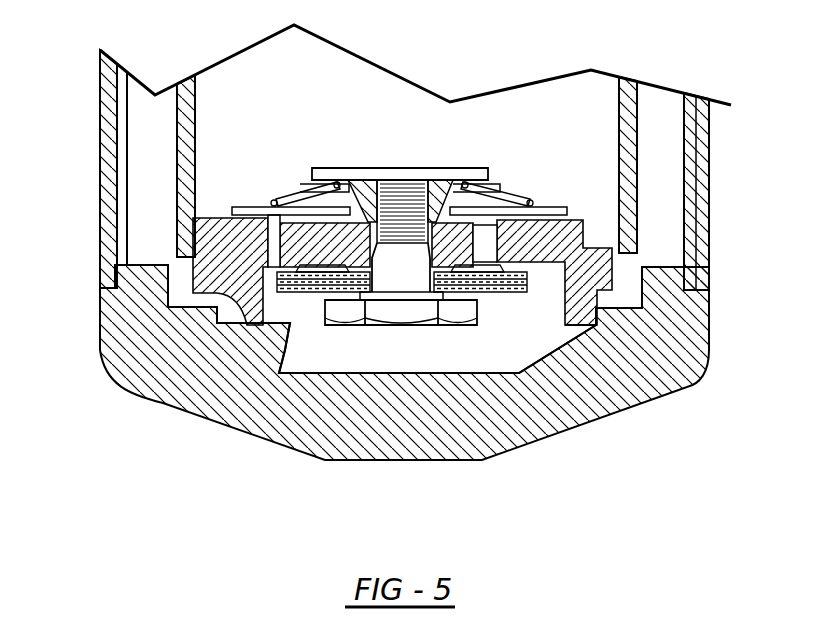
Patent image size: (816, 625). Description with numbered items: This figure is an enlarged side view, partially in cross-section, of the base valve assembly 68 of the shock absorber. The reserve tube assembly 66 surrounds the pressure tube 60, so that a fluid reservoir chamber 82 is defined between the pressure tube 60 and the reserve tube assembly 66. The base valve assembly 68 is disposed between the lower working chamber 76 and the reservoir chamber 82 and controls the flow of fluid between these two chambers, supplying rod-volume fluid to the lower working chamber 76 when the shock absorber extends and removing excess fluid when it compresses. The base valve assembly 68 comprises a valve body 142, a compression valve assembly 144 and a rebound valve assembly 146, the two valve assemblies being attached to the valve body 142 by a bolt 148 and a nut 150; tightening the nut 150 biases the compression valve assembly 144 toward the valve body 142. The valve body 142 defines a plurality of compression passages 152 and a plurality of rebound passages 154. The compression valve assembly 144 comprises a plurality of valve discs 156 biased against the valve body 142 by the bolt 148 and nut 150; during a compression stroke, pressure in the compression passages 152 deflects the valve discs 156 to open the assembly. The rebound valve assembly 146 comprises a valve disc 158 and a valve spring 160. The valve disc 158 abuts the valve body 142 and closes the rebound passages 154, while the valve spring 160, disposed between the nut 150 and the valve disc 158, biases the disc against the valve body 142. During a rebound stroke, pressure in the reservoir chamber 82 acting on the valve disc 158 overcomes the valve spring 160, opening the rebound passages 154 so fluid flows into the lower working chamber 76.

The pressure tube 60 is at (622, 100).
The reserve tube assembly 66 is at (120, 81).
The base valve assembly 68 is at (658, 314).
The lower working chamber 76 is at (301, 88).
The fluid reservoir chamber 82 is at (654, 142).
The valve body 142 is at (619, 267).
The compression valve assembly 144 is at (295, 317).
The rebound valve assembly 146 is at (523, 165).
The bolt 148 is at (395, 316).
The nut 150 is at (350, 168).
The compression passages 152 is at (485, 242).
The rebound passages 154 is at (273, 227).
The valve discs 156 is at (290, 293).
The valve disc 158 is at (243, 208).
The valve spring 160 is at (303, 193).